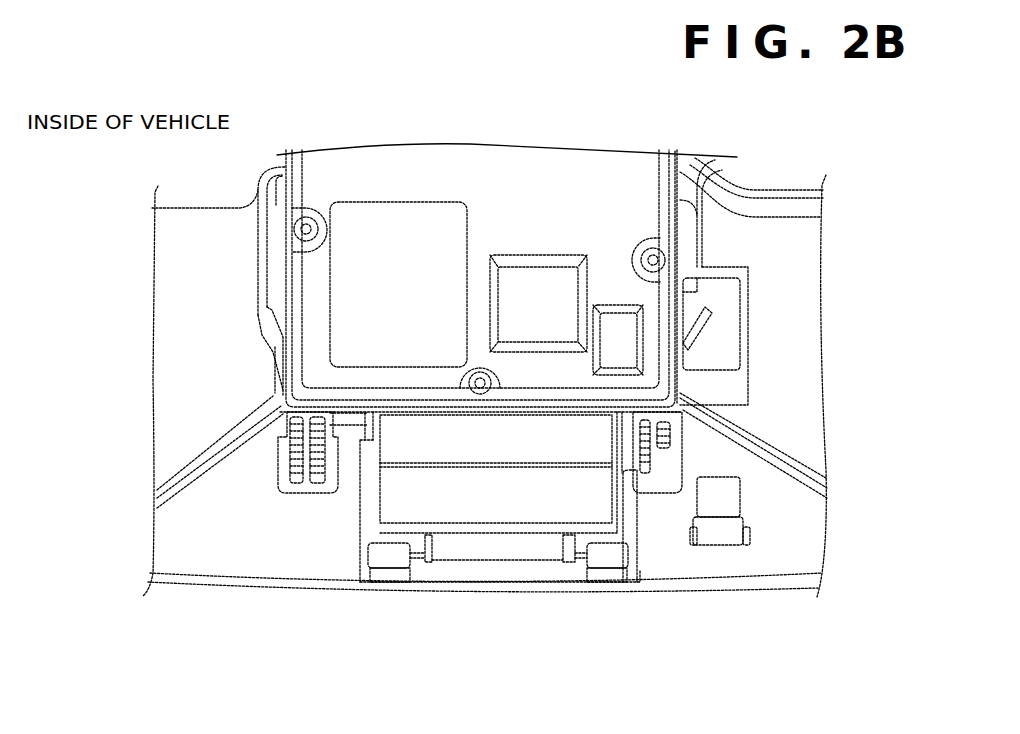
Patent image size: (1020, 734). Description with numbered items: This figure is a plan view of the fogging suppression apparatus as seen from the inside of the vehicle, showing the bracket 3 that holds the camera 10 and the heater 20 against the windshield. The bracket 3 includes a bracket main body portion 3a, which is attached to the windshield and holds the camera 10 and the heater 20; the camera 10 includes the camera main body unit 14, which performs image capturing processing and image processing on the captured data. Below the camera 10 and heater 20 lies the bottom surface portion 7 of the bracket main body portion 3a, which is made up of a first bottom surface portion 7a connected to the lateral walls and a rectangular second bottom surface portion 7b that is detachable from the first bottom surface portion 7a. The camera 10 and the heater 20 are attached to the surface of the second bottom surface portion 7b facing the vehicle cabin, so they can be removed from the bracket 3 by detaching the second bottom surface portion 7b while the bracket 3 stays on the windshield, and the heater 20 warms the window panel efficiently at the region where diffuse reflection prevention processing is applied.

The bracket 3 is at (788, 176).
The bracket main body portion 3a is at (175, 292).
The surroundings detection apparatus (camera) 10 is at (500, 208).
The camera main body unit 14 is at (478, 272).
The heating apparatus (heater) 20 is at (452, 490).
The bottom surface portion 7 is at (672, 657).
The first bottom surface portion 7a is at (650, 550).
The second bottom surface portion 7b is at (533, 537).